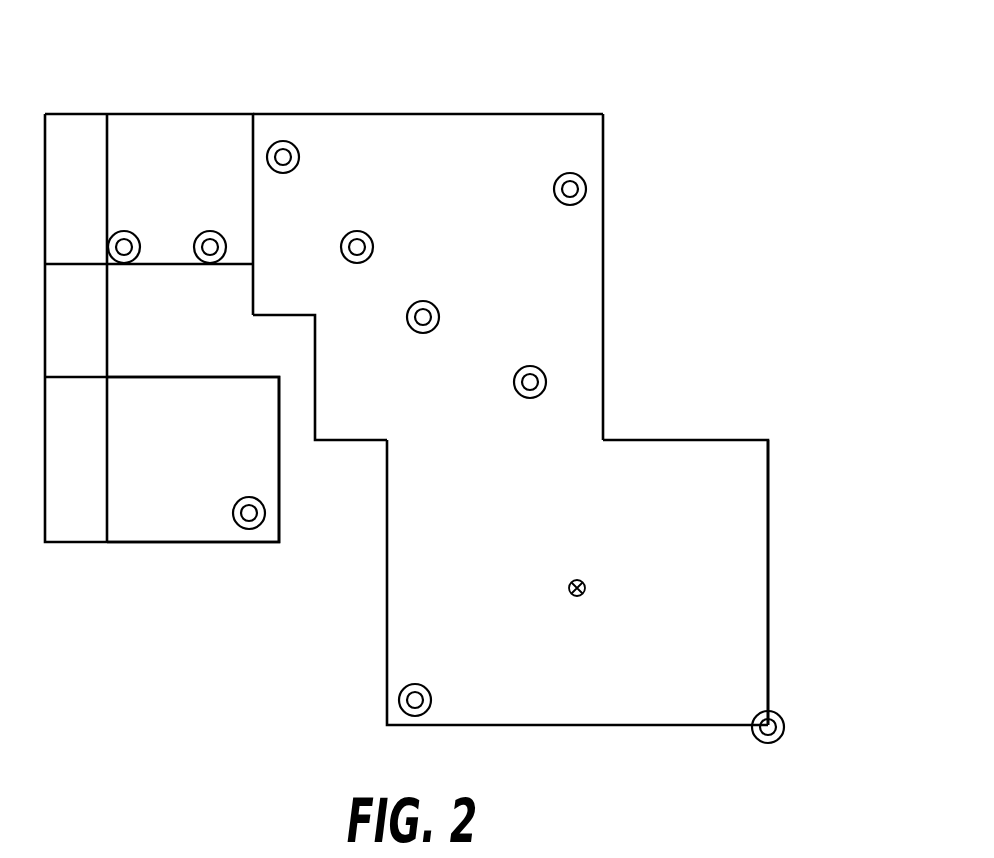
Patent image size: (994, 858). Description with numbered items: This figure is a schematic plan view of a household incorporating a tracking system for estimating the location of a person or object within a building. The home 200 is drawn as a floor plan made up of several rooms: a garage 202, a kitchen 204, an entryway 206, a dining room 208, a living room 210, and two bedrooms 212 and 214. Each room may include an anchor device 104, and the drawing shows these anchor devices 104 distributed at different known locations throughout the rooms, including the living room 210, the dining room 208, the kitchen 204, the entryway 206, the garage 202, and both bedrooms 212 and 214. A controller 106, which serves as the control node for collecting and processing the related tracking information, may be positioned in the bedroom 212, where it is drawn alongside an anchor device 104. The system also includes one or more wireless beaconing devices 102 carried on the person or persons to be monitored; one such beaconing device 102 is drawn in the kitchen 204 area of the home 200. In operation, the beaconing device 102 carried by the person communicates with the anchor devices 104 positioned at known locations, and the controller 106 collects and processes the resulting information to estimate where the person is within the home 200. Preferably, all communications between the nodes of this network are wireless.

The home 200 is at (718, 60).
The garage 202 is at (748, 542).
The kitchen 204 is at (580, 370).
The entryway 206 is at (360, 420).
The dining room 208 is at (580, 248).
The living room 210 is at (378, 122).
The bedroom 212 is at (170, 122).
The bedroom 214 is at (189, 388).
The anchor device 104 is at (357, 230).
The control node 106 is at (124, 266).
The beaconing device 102 is at (577, 578).